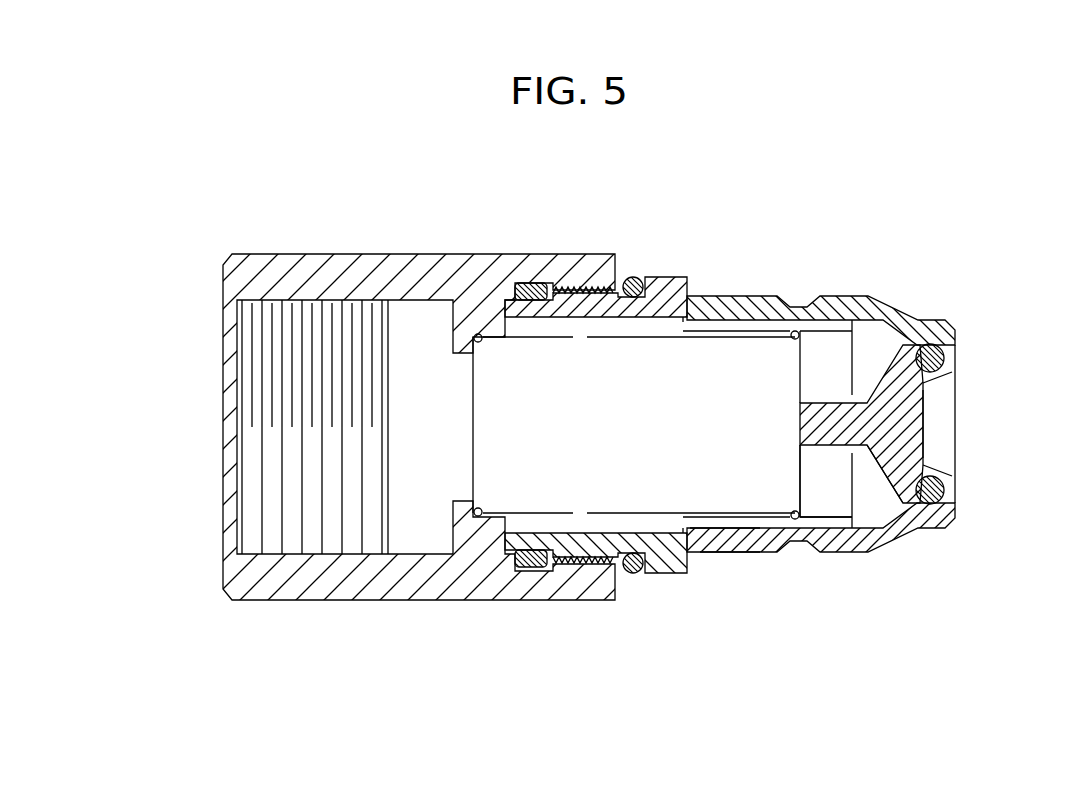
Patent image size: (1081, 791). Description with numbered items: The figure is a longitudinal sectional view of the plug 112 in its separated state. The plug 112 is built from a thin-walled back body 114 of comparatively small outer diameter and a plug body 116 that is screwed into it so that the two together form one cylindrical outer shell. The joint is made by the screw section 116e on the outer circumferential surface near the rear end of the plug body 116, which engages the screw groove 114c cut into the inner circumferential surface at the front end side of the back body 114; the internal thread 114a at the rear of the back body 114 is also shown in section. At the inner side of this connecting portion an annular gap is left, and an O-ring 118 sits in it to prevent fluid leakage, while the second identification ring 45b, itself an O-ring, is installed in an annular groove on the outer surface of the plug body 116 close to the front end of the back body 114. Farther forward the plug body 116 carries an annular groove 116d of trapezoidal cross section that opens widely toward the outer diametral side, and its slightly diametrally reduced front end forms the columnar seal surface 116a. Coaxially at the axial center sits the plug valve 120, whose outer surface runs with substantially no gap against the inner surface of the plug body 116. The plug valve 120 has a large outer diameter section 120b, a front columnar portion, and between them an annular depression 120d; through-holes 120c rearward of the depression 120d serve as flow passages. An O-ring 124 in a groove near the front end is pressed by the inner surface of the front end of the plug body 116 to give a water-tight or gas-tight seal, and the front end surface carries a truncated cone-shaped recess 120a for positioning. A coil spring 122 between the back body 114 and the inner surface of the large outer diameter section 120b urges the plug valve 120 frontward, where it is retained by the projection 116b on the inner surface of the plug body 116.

The plug 112 is at (437, 193).
The back body 114 is at (398, 264).
The internal thread of body 114a is at (257, 446).
The screw groove 114c is at (586, 287).
The plug body 116 is at (736, 298).
The seal surface 116a is at (927, 318).
The projection 116b is at (706, 298).
The annular groove 116d is at (775, 548).
The screw section 116e is at (566, 565).
The O-ring 118 is at (530, 284).
The plug valve 120 is at (912, 410).
The truncated cone-shaped recess 120a is at (928, 428).
The large outer diameter section 120b is at (712, 540).
The through-holes 120c is at (825, 492).
The depression 120d is at (873, 500).
The coil spring 122 is at (478, 520).
The O-ring 124 is at (946, 485).
The second identification ring 45b is at (634, 576).